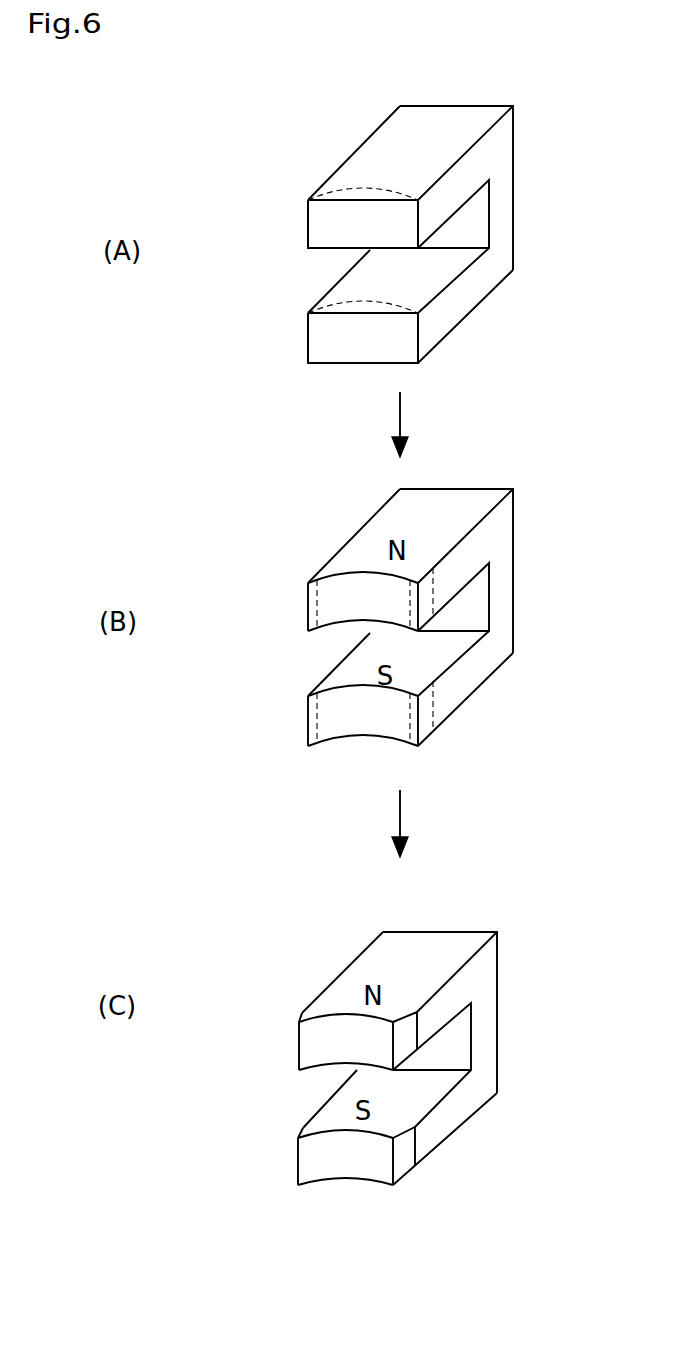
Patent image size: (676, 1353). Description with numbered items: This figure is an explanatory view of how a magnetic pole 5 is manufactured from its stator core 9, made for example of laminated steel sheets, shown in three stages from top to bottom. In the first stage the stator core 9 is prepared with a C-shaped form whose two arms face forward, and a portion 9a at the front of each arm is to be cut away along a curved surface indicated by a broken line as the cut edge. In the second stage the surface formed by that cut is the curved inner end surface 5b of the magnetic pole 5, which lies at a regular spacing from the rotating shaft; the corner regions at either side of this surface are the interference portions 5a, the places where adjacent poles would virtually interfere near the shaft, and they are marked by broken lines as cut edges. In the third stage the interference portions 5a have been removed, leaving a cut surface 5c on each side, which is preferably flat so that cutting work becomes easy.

The magnetic pole 5 is at (367, 172).
The stator core 9 is at (501, 203).
The portion cut from the stator core 9a is at (318, 215).
The interference portion 5a is at (312, 603).
The inner end surface 5b is at (335, 607).
The cut surface 5c is at (300, 1018).